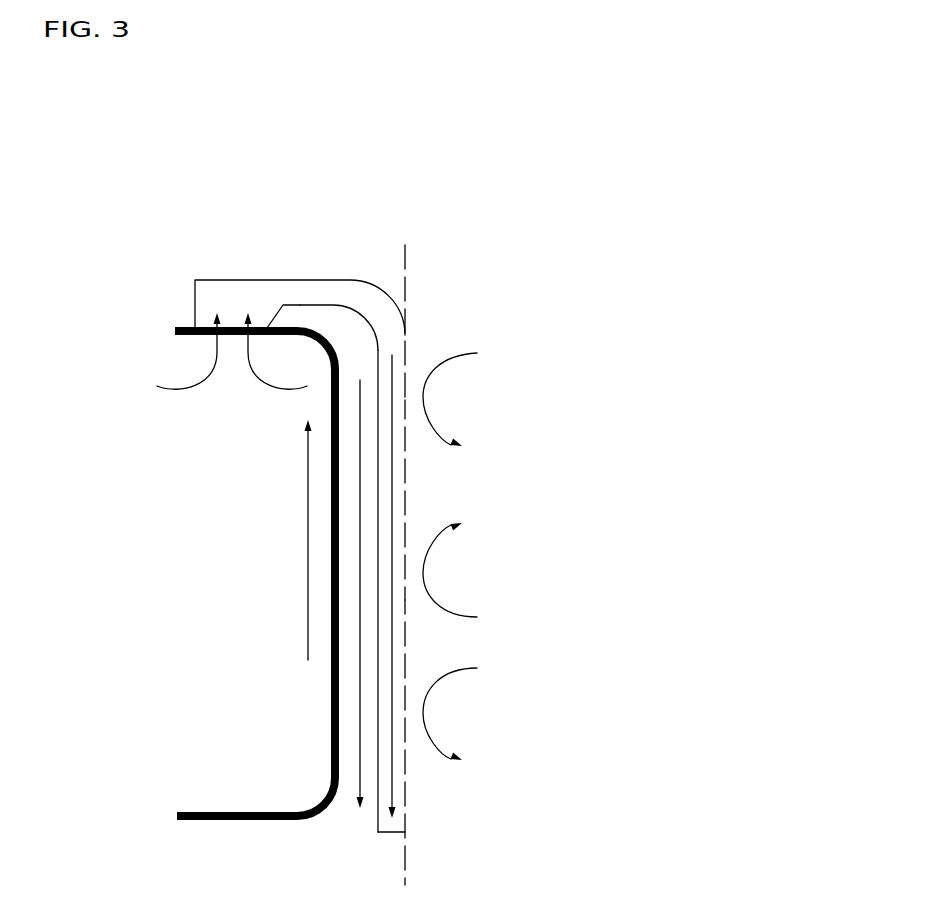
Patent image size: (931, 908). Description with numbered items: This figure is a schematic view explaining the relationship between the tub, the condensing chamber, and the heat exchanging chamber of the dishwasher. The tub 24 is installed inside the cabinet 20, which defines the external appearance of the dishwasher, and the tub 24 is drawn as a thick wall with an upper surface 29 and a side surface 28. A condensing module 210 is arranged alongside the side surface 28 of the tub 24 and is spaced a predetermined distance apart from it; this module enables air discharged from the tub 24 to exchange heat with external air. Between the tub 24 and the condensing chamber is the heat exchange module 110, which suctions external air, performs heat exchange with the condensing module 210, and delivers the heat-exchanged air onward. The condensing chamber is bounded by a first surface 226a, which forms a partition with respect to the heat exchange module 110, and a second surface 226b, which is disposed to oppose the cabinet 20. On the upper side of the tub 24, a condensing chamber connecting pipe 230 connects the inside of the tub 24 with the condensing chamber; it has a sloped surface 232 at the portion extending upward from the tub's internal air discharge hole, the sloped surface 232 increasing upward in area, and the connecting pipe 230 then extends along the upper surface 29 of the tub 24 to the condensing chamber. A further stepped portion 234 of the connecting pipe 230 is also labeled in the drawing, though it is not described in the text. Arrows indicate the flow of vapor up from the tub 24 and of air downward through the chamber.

The cabinet 20 is at (406, 300).
The tub 24 is at (338, 654).
The side surface 28 is at (338, 632).
The upper surface 29 is at (318, 335).
The heat exchange module 110 is at (366, 516).
The condensing module 210 is at (408, 464).
The first surface 226a is at (377, 737).
The second surface 226b is at (407, 690).
The condensing chamber connecting pipe 230 is at (294, 263).
The sloped surface 232 is at (273, 316).
The step portion 234 is at (322, 305).